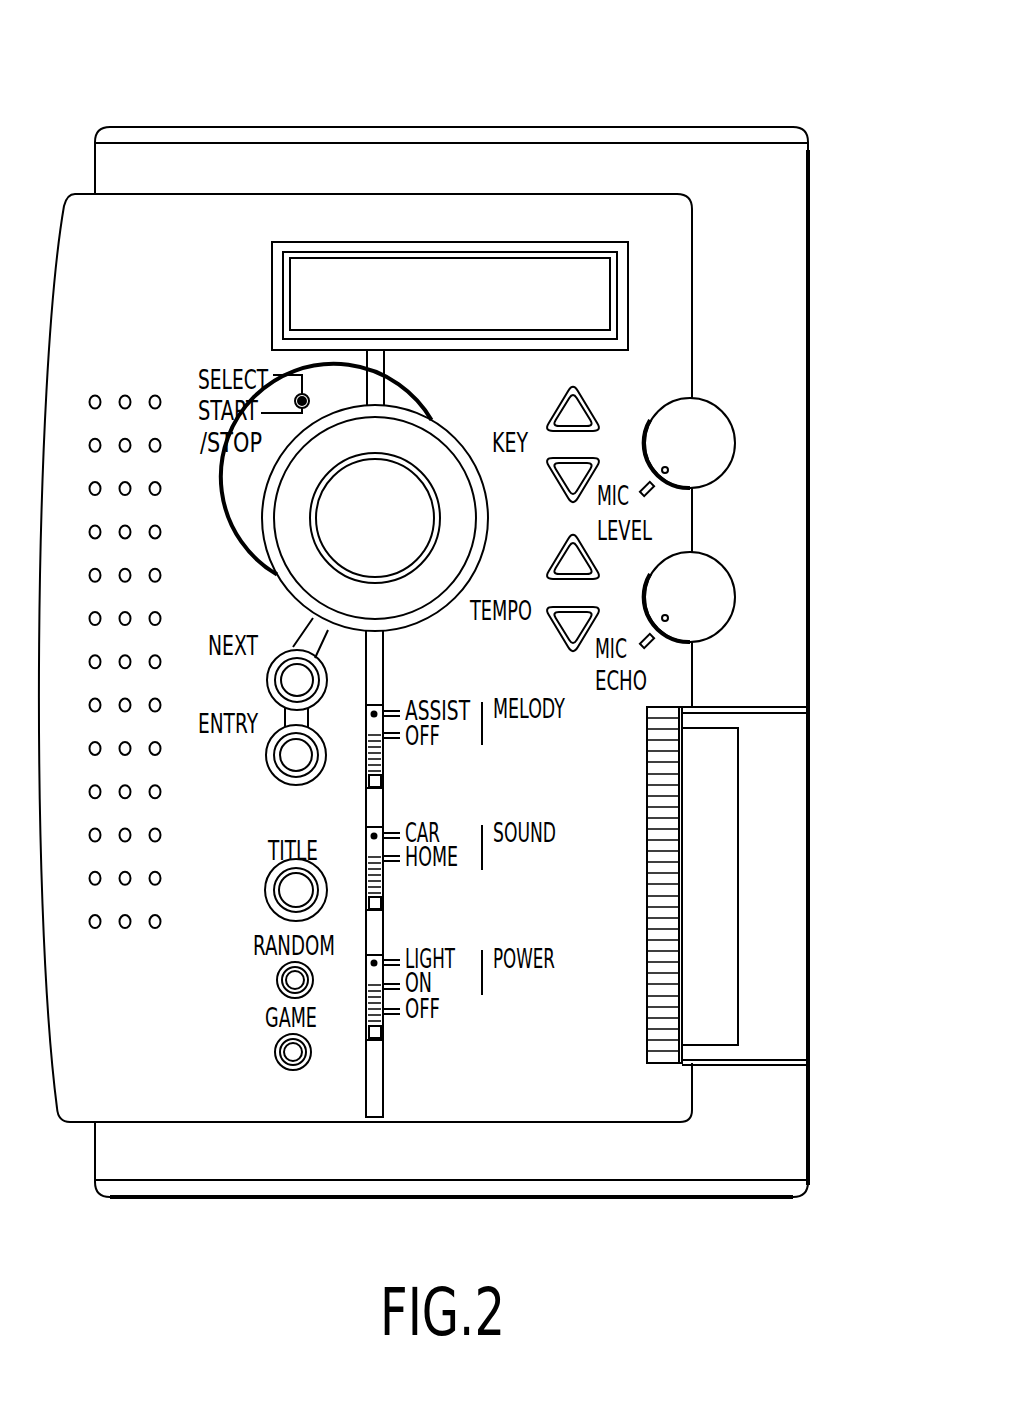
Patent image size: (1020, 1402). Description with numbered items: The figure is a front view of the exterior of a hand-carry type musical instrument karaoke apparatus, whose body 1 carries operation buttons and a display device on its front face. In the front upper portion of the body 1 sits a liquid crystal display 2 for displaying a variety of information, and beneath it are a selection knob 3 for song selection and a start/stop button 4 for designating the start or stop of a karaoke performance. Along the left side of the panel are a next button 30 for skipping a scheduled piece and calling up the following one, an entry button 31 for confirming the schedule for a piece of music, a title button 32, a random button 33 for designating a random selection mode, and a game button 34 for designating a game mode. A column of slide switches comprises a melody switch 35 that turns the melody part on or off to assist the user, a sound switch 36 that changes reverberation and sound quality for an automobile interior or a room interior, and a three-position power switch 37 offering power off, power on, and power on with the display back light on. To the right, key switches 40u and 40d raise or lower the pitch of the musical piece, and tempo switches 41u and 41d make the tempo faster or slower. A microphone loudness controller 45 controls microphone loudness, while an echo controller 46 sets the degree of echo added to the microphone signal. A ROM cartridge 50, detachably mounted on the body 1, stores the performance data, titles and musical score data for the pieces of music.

The body 1 is at (452, 127).
The liquid crystal display 2 is at (516, 268).
The selection knob 3 is at (287, 520).
The start/stop button 4 is at (335, 553).
The next button 30 is at (267, 684).
The entry button 31 is at (267, 778).
The title button 32 is at (266, 906).
The random button 33 is at (277, 987).
The game button 34 is at (275, 1053).
The melody switch 35 is at (379, 780).
The sound switch 36 is at (379, 907).
The power switch 37 is at (380, 1036).
The key switch 40u is at (584, 413).
The key switch 40d is at (563, 478).
The tempo switch 41u is at (584, 553).
The tempo switch 41d is at (563, 626).
The microphone loudness controller 45 is at (708, 435).
The echo controller 46 is at (714, 573).
The ROM cartridge 50 is at (808, 788).